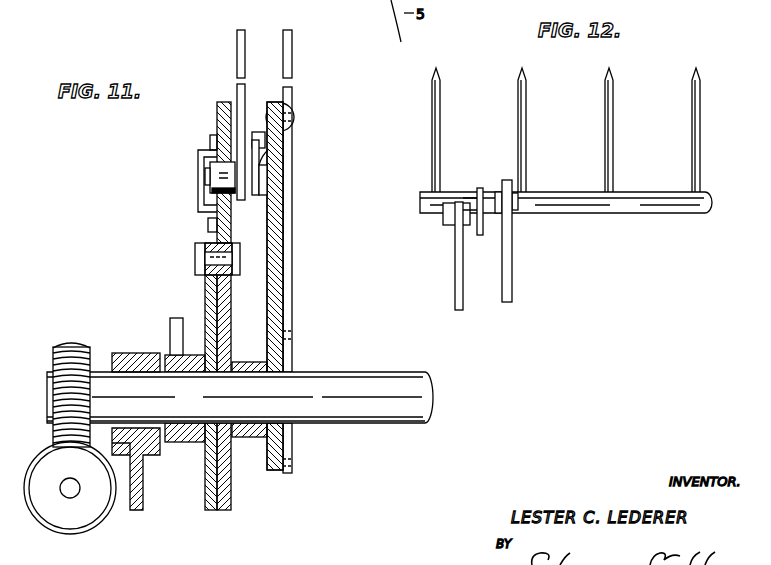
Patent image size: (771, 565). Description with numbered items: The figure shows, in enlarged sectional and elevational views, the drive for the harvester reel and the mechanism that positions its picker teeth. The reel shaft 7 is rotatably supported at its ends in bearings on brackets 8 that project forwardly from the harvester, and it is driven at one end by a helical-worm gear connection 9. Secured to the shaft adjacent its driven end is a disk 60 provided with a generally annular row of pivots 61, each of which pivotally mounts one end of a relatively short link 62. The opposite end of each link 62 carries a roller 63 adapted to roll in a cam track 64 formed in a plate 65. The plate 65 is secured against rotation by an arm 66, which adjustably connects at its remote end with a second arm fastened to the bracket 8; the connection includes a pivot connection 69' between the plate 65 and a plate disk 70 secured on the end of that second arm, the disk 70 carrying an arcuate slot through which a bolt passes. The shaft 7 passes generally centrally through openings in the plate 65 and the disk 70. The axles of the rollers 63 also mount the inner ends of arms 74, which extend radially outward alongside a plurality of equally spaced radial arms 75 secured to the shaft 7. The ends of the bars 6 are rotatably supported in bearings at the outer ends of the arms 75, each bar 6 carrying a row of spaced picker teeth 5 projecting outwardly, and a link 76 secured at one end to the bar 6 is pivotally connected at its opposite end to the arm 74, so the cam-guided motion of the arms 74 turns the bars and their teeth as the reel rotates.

In FIG. 12, the picker teeth 5 is at (693, 128).
In FIG. 12, the bar 6 is at (641, 206).
In FIG. 11, the shaft 7 is at (362, 379).
In FIG. 11, the bracket 8 is at (144, 480).
In FIG. 11, the helical-worm gear connection 9 is at (45, 457).
In FIG. 11, the disk 60 is at (279, 143).
In FIG. 11, the pivot 61 is at (252, 140).
In FIG. 11, the link 62 is at (258, 163).
In FIG. 11, the roller 63 is at (210, 160).
In FIG. 11, the cam track 64 is at (213, 185).
In FIG. 11, the plate 65 is at (220, 108).
In FIG. 11, the arm 66 is at (176, 330).
In FIG. 11, the pivot connection 69' is at (199, 259).
In FIG. 11, the plate disk 70 is at (208, 290).
In FIG. 11, the arm 74 is at (244, 49).
In FIG. 12, the arm 74 is at (458, 270).
In FIG. 11, the radial arm 75 is at (292, 100).
In FIG. 12, the radial arm 75 is at (513, 250).
In FIG. 12, the link 76 is at (482, 200).